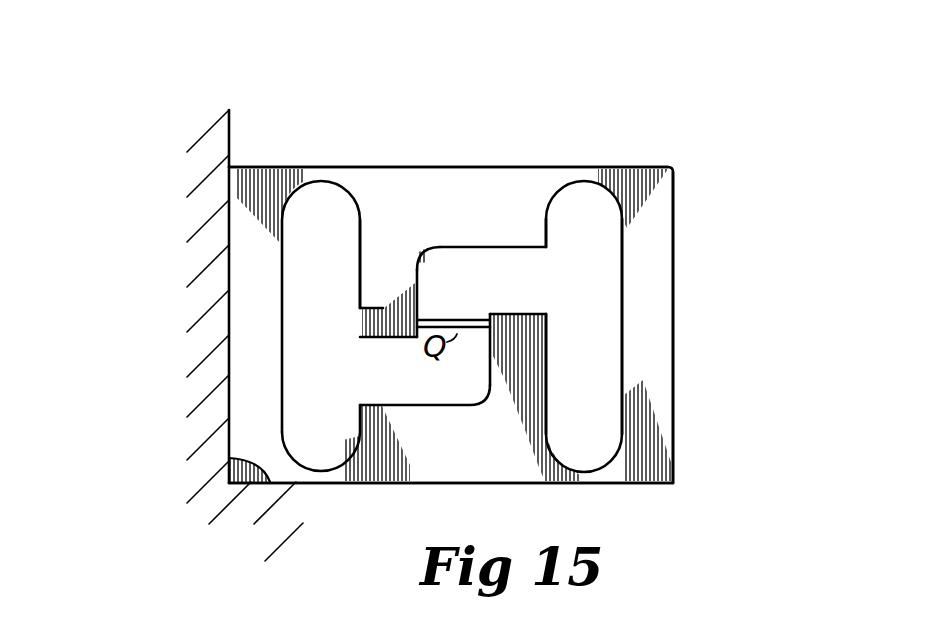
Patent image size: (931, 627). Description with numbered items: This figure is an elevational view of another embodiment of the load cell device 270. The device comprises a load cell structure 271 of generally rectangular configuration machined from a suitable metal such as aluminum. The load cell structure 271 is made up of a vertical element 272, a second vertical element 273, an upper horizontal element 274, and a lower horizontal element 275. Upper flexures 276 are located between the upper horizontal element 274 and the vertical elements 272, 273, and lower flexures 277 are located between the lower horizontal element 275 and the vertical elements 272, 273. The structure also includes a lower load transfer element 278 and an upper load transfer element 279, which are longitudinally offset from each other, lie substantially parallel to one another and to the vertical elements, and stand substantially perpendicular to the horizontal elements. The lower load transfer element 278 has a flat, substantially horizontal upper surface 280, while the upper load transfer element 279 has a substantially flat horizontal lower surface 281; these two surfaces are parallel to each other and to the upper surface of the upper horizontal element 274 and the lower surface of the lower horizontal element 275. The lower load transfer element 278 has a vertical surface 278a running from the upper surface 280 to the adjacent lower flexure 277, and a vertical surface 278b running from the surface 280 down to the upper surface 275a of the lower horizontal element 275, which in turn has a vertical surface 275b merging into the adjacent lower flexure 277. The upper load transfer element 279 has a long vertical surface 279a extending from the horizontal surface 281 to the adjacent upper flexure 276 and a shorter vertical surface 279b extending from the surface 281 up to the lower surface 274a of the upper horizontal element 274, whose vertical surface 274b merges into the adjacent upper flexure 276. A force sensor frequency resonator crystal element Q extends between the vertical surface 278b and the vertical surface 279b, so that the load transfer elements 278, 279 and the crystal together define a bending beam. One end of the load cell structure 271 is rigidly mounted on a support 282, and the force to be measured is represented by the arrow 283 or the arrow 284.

The load cell device 270 is at (545, 92).
The load cell structure 271 is at (690, 200).
The vertical element 272 is at (243, 335).
The vertical element 273 is at (657, 322).
The upper horizontal element 274 is at (440, 178).
The lower surface of upper horizontal element 274a is at (532, 250).
The vertical surface 274b is at (546, 216).
The lower horizontal element 275 is at (467, 470).
The upper surface of lower horizontal element 275a is at (397, 405).
The vertical surface 275b is at (345, 432).
The upper flexures 276 is at (317, 174).
The lower flexures 277 is at (320, 486).
The lower load transfer element 278 is at (527, 342).
The vertical surface 278a is at (572, 310).
The vertical surface 278b is at (488, 343).
The upper load transfer element 279 is at (362, 310).
The long vertical surface 279a is at (352, 223).
The shorter vertical surface 279b is at (427, 294).
The upper surface 280 is at (531, 312).
The lower surface 281 is at (373, 336).
The support 282 is at (228, 463).
The arrow 283 is at (643, 140).
The arrow 284 is at (645, 510).